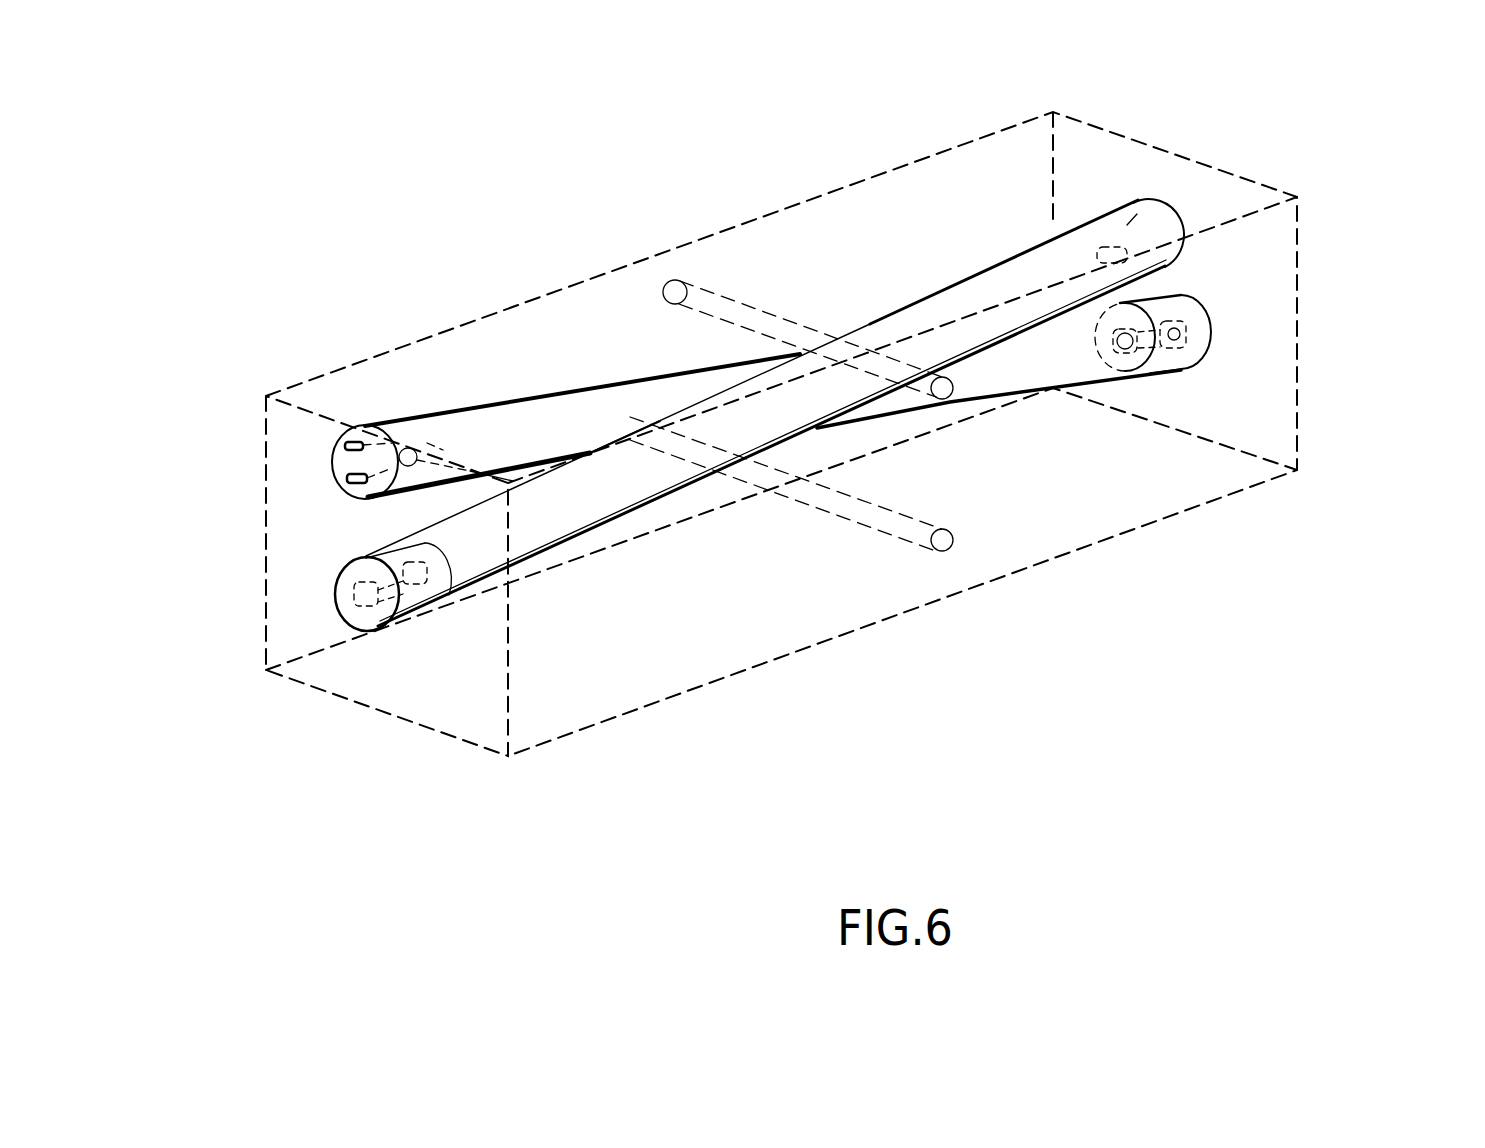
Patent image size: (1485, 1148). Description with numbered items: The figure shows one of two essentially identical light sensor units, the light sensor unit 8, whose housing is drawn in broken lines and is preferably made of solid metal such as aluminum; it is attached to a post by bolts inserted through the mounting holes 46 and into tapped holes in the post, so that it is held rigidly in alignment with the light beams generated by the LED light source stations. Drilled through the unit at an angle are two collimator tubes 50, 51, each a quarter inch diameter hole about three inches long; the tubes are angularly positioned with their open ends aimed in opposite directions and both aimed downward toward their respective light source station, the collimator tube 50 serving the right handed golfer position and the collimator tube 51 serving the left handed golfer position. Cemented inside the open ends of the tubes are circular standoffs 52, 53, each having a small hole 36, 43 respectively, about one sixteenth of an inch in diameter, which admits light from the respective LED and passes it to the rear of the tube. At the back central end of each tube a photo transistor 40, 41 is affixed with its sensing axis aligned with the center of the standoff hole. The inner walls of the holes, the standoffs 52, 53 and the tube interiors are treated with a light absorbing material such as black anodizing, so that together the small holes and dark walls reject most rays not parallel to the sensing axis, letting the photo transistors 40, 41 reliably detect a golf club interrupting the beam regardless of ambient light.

The light sensor unit 8 is at (675, 250).
The hole 36 is at (365, 603).
The photo transistor 40 is at (1120, 237).
The photo transistor sensor 41 is at (412, 452).
The hole 43 is at (1183, 335).
The mounting holes 46 is at (955, 395).
The collimator tube 50 is at (605, 485).
The collimator tube 51 is at (497, 423).
The standoff 52 is at (415, 605).
The standoff 53 is at (1186, 365).